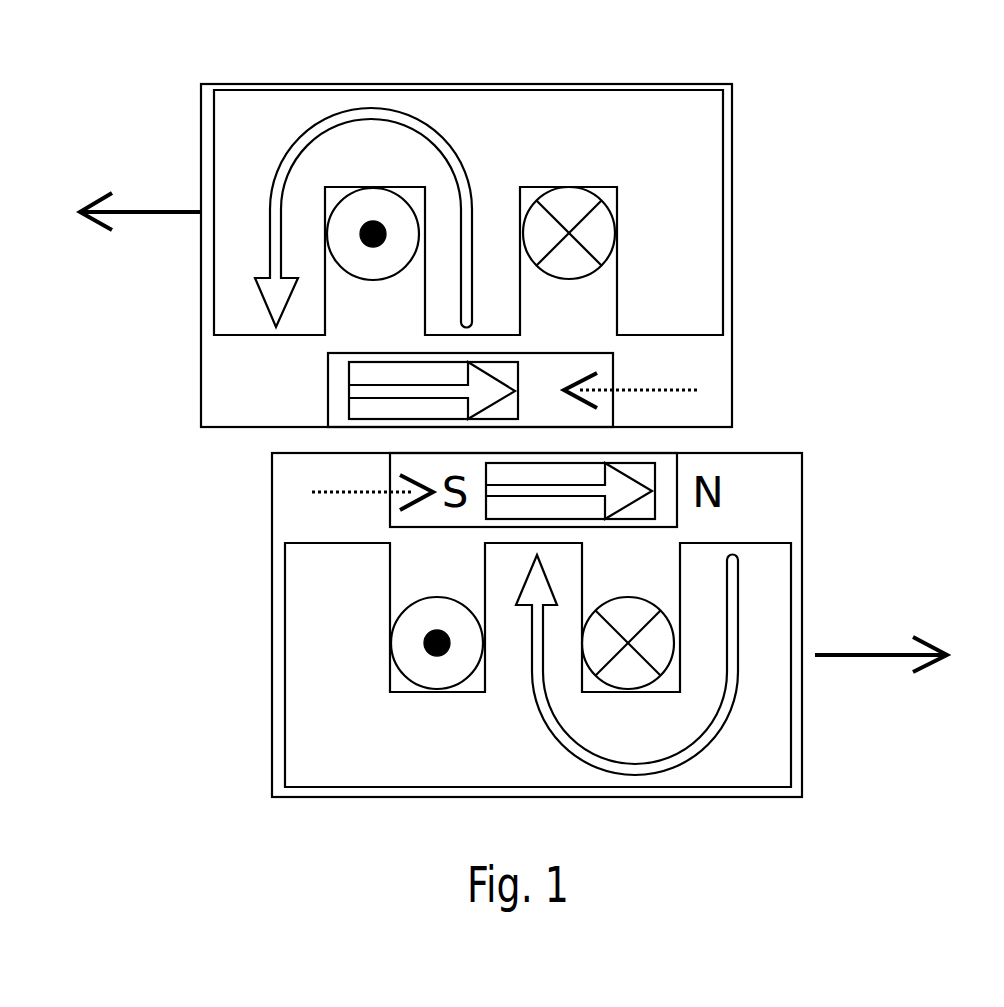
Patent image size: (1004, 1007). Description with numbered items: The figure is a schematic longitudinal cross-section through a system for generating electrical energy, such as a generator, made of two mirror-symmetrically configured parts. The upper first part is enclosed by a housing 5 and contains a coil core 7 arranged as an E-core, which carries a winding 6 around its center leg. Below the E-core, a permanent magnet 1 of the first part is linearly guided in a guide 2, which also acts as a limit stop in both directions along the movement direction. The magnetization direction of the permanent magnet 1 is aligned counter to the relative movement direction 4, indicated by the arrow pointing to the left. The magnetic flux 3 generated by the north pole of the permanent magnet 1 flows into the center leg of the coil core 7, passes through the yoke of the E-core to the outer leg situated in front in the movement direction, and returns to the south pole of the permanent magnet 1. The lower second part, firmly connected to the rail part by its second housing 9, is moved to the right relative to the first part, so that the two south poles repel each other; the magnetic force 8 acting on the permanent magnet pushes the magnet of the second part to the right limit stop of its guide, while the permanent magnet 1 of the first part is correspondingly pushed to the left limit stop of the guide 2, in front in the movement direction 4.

The permanent magnet 1 is at (378, 408).
The guide 2 is at (313, 366).
The magnetic flux 3 is at (273, 292).
The relative movement direction 4 is at (140, 194).
The housing 5 is at (740, 120).
The winding 6 is at (593, 229).
The coil core 7 is at (684, 292).
The magnetic force acting on the permanent magnet 8 is at (712, 412).
The second housing 9 is at (810, 496).